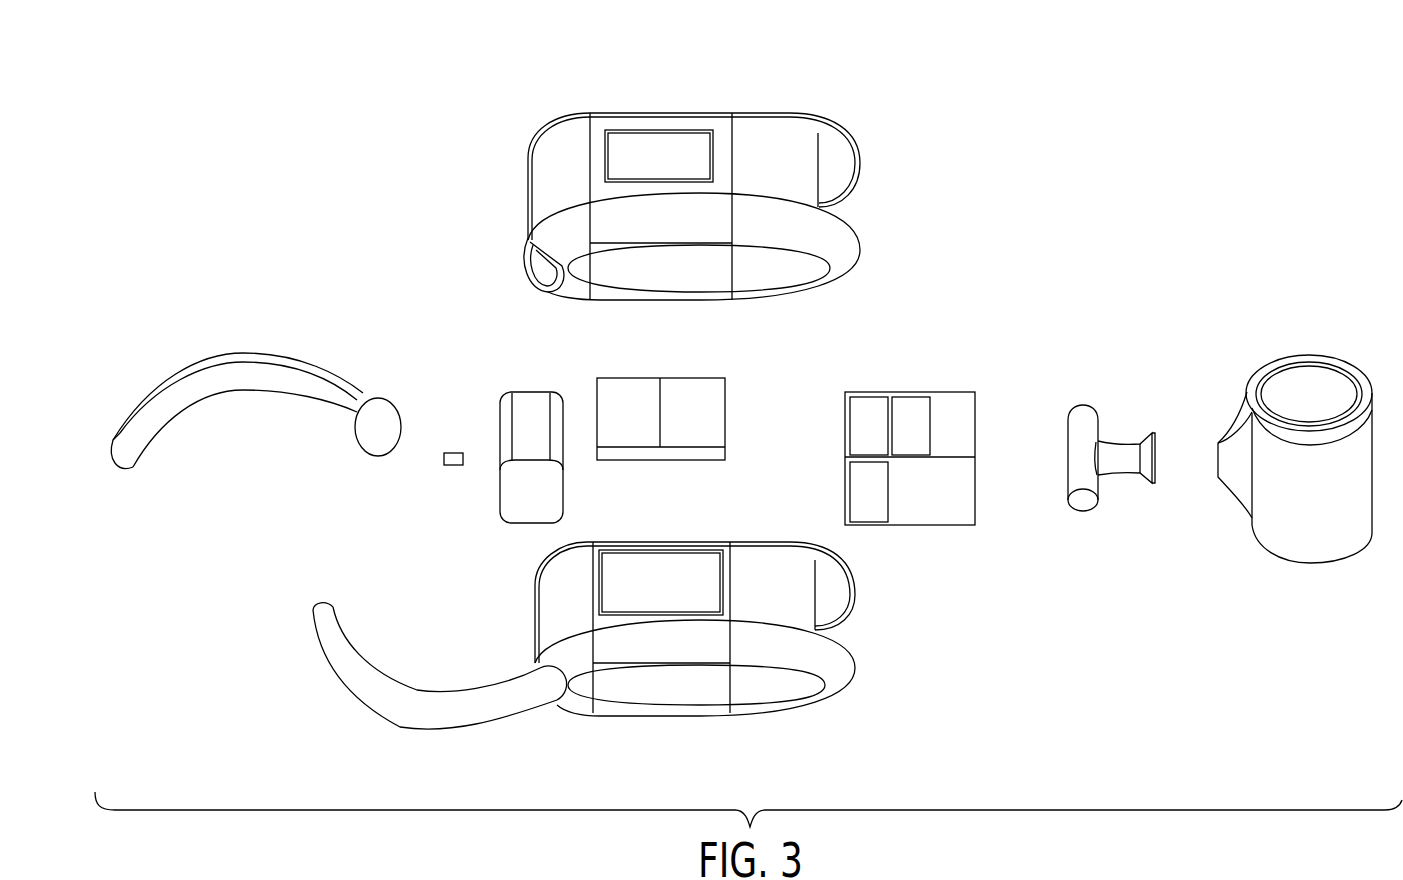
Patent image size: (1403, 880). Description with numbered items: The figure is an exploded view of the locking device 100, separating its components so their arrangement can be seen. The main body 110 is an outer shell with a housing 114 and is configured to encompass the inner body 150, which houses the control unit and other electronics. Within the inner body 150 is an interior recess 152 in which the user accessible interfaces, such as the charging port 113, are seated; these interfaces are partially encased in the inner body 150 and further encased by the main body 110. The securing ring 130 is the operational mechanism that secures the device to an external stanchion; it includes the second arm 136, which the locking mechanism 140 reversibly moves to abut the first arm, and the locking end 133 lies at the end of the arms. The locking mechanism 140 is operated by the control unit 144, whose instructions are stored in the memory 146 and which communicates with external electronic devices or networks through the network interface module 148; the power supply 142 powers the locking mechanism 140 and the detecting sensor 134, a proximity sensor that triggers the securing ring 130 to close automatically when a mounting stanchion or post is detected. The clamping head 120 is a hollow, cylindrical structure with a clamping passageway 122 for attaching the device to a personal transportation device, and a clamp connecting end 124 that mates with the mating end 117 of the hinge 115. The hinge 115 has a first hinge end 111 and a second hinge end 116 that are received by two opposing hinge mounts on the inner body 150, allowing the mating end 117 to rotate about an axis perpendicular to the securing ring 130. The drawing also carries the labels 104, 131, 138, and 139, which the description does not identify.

The locking device 100 is at (1155, 152).
The display window 104 is at (628, 129).
The main body 110 is at (780, 113).
The first hinge end 111 is at (1098, 408).
The charging port 113 is at (700, 378).
The housing 114 is at (848, 248).
The hinge 115 is at (1083, 405).
The second hinge end 116 is at (1083, 513).
The mating end 117 is at (1142, 483).
The clamping head 120 is at (1333, 537).
The clamping passageway 122 is at (1308, 355).
The clamp connecting end 124 is at (1235, 480).
The securing ring 130 is at (158, 380).
The band end 131 is at (533, 697).
The locking end 133 is at (367, 443).
The detecting sensor 134 is at (453, 467).
The second arm 136 is at (200, 383).
The hook portion 138 is at (355, 687).
The lower housing 139 is at (838, 603).
The locking mechanism 140 is at (507, 392).
The power supply 142 is at (937, 525).
The control unit 144 is at (873, 523).
The memory 146 is at (870, 395).
The network interface module 148 is at (913, 393).
The inner body 150 is at (835, 688).
The interior recess 152 is at (598, 582).